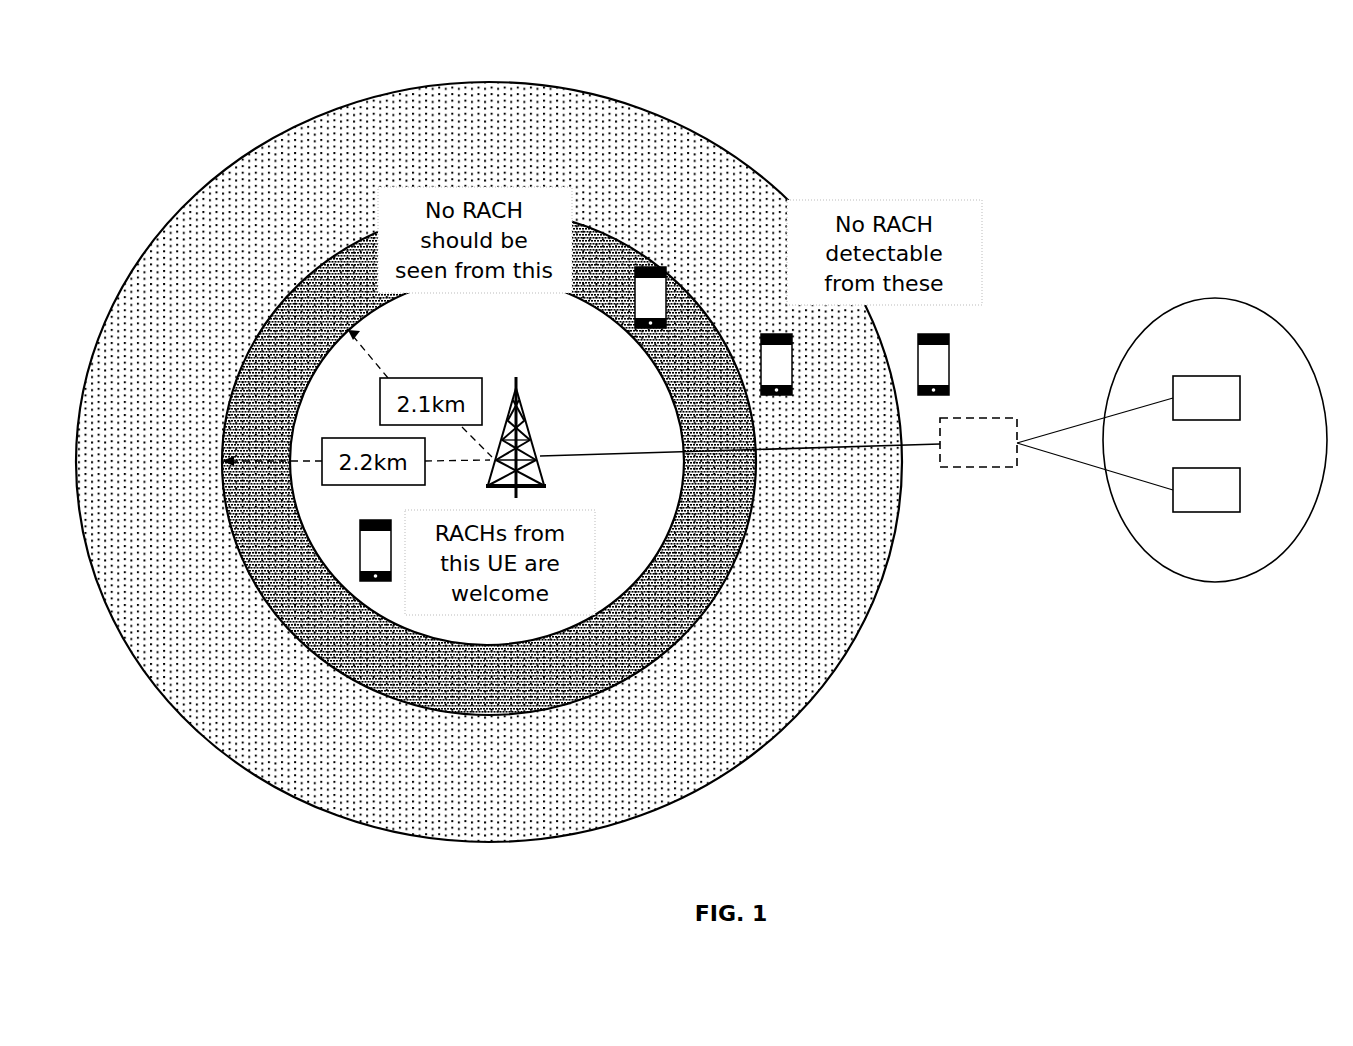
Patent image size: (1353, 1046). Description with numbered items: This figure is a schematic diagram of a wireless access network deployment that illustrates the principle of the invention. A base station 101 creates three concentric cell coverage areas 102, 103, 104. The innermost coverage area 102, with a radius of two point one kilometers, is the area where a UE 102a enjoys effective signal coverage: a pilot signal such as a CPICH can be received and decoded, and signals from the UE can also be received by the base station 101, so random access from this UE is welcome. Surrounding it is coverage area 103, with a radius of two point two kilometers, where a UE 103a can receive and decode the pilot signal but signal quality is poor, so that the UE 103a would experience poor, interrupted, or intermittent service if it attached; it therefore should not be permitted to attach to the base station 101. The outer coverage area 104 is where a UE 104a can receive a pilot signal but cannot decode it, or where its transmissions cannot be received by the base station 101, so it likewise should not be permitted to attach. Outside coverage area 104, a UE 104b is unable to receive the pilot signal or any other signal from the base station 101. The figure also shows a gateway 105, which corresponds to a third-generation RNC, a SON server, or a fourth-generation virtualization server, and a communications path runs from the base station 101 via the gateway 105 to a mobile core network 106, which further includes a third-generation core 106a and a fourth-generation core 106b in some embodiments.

The base station 101 is at (517, 403).
The coverage area 102 is at (669, 520).
The UE 102a is at (362, 536).
The coverage area 103 is at (731, 382).
The UE 103a is at (648, 333).
The coverage area 104 is at (694, 126).
The UE 104a is at (793, 370).
The UE 104b is at (955, 370).
The gateway 105 is at (1002, 413).
The mobile core network 106 is at (1283, 328).
The 3G core 106a is at (1216, 421).
The 4G core 106b is at (1222, 513).